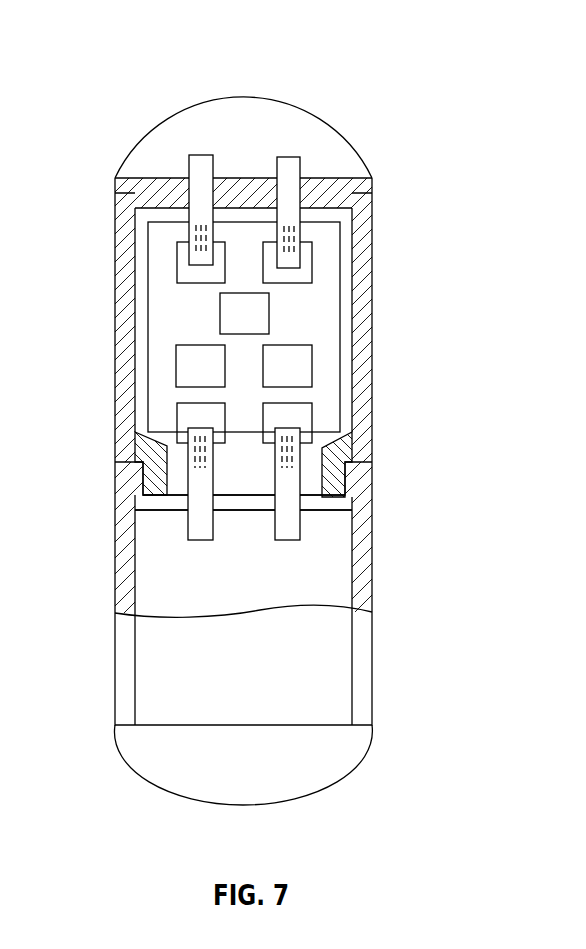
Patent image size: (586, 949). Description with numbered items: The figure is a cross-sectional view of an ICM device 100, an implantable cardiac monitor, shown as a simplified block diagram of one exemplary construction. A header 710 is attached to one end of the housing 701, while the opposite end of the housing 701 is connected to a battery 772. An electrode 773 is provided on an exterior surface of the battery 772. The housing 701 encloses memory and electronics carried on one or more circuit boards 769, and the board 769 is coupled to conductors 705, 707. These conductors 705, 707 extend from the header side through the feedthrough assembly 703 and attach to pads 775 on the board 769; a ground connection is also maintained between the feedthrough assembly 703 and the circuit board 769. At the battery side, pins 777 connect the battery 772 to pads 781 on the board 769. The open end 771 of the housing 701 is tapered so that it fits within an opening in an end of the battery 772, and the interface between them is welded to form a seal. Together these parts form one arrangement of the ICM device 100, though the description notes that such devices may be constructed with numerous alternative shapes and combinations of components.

The ICM device 100 is at (399, 46).
The header 710 is at (198, 101).
The conductor 705 is at (189, 166).
The conductor 707 is at (302, 165).
The feedthrough assembly 703 is at (373, 214).
The pads 775 is at (176, 262).
The circuit board 769 is at (327, 320).
The housing 701 is at (373, 370).
The pads 781 is at (177, 408).
The open end 771 is at (378, 459).
The battery 772 is at (372, 553).
The pins 777 is at (200, 540).
The electrode 773 is at (380, 737).